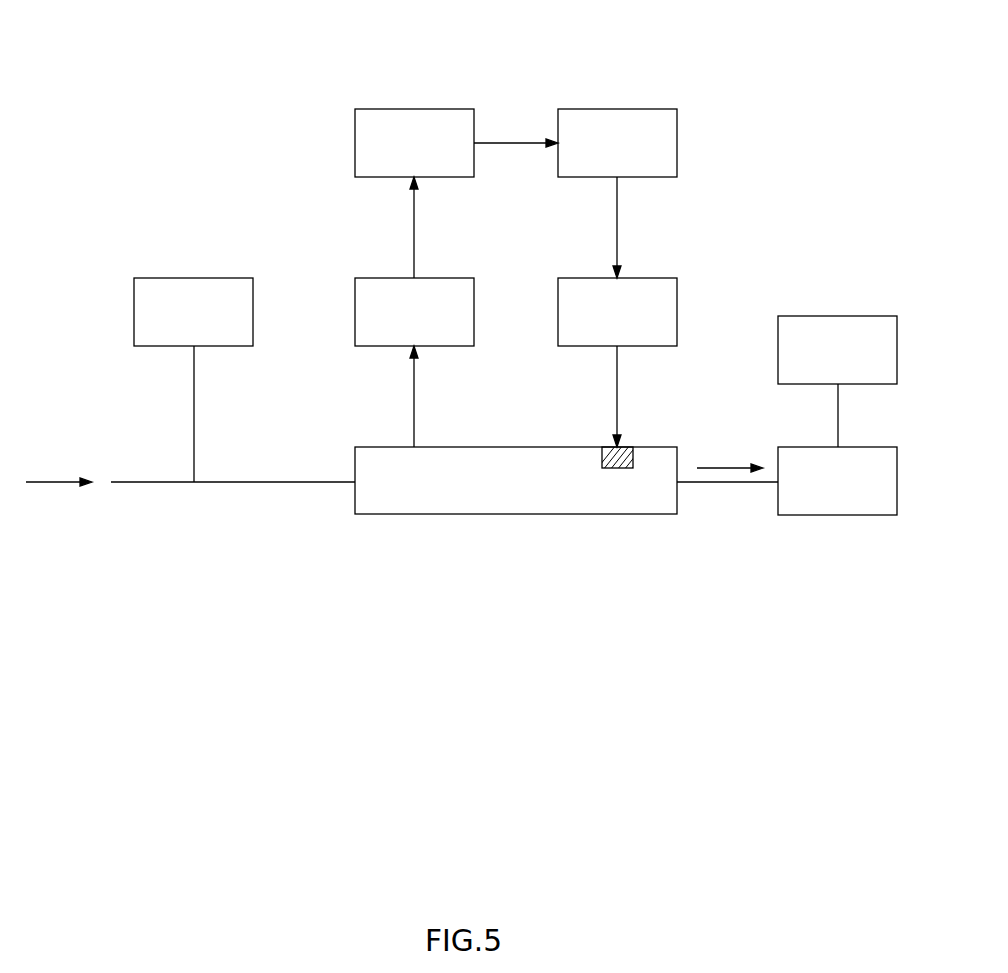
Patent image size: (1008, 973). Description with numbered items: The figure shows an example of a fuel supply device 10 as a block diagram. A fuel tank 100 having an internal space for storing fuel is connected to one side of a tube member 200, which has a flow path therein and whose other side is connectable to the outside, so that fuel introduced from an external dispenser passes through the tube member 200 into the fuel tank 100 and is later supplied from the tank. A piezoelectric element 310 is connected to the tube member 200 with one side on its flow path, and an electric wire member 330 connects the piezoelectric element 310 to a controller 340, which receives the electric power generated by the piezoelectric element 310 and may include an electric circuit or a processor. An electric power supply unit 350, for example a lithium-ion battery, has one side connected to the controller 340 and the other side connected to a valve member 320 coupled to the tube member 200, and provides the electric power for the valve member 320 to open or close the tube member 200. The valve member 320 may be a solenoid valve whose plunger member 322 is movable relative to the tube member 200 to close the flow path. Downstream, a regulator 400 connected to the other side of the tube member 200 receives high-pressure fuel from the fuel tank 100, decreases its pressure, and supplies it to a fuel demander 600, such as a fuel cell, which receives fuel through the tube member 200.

The fuel supply device 10 is at (103, 78).
The fuel tank 100 is at (193, 278).
The tube member 200 is at (355, 497).
The piezoelectric element 310 is at (380, 278).
The valve member 320 is at (677, 310).
The plunger member 322 is at (617, 468).
The electric wire member 330 is at (414, 232).
The controller 340 is at (415, 109).
The electric power supply unit 350 is at (618, 109).
The regulator 400 is at (838, 515).
The fuel demander 600 is at (838, 316).